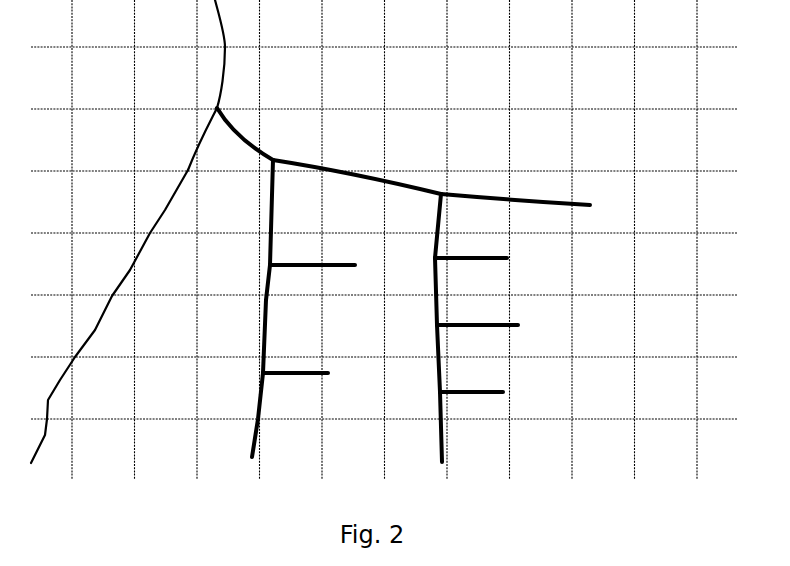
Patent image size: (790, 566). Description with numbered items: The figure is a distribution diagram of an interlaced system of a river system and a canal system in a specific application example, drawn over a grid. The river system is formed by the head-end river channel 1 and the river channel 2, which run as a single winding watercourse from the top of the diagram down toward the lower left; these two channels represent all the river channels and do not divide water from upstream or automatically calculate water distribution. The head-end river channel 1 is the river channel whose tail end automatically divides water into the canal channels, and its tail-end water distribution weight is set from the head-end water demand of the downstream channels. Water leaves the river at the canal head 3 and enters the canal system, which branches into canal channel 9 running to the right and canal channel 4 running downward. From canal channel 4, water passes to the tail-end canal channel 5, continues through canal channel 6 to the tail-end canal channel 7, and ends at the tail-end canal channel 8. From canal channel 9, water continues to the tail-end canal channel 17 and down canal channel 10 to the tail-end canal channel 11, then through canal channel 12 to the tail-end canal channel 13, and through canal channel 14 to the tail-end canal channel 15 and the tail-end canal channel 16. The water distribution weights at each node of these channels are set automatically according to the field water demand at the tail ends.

The head-end river channel 1 is at (206, 85).
The river channel 2 is at (109, 316).
The canal head 3 is at (245, 134).
The canal channel 4 is at (261, 212).
The tail-end canal channel 5 is at (312, 251).
The canal channel 6 is at (256, 319).
The tail-end canal channel 7 is at (295, 359).
The tail-end canal channel 8 is at (251, 415).
The canal channel 9 is at (357, 172).
The canal channel 10 is at (423, 226).
The tail-end canal channel 11 is at (471, 246).
The canal channel 12 is at (420, 291).
The tail-end canal channel 13 is at (477, 313).
The canal channel 14 is at (423, 358).
The tail-end canal channel 15 is at (471, 379).
The tail-end canal channel 16 is at (424, 427).
The tail-end canal channel 17 is at (515, 190).